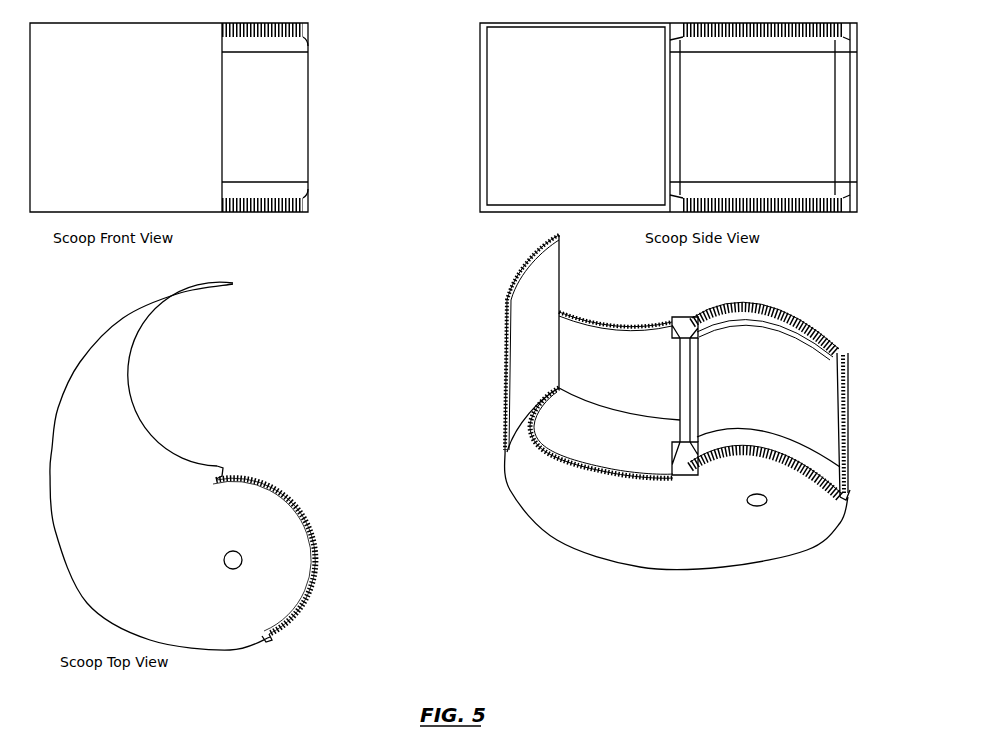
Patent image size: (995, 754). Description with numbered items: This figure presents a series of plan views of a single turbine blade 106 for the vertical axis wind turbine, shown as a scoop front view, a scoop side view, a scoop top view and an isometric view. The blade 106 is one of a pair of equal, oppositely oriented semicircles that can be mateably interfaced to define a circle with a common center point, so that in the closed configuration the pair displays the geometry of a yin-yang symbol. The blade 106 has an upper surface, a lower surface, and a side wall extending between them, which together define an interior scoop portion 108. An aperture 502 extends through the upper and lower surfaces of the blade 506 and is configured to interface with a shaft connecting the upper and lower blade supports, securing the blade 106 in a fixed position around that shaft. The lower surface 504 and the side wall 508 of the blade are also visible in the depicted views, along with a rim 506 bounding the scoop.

The blade 106 is at (902, 307).
The scoop portion 108 is at (618, 443).
The aperture 502 is at (760, 506).
The base plate 504 is at (640, 567).
The blade 506 is at (613, 322).
The scoop wall 508 is at (503, 372).